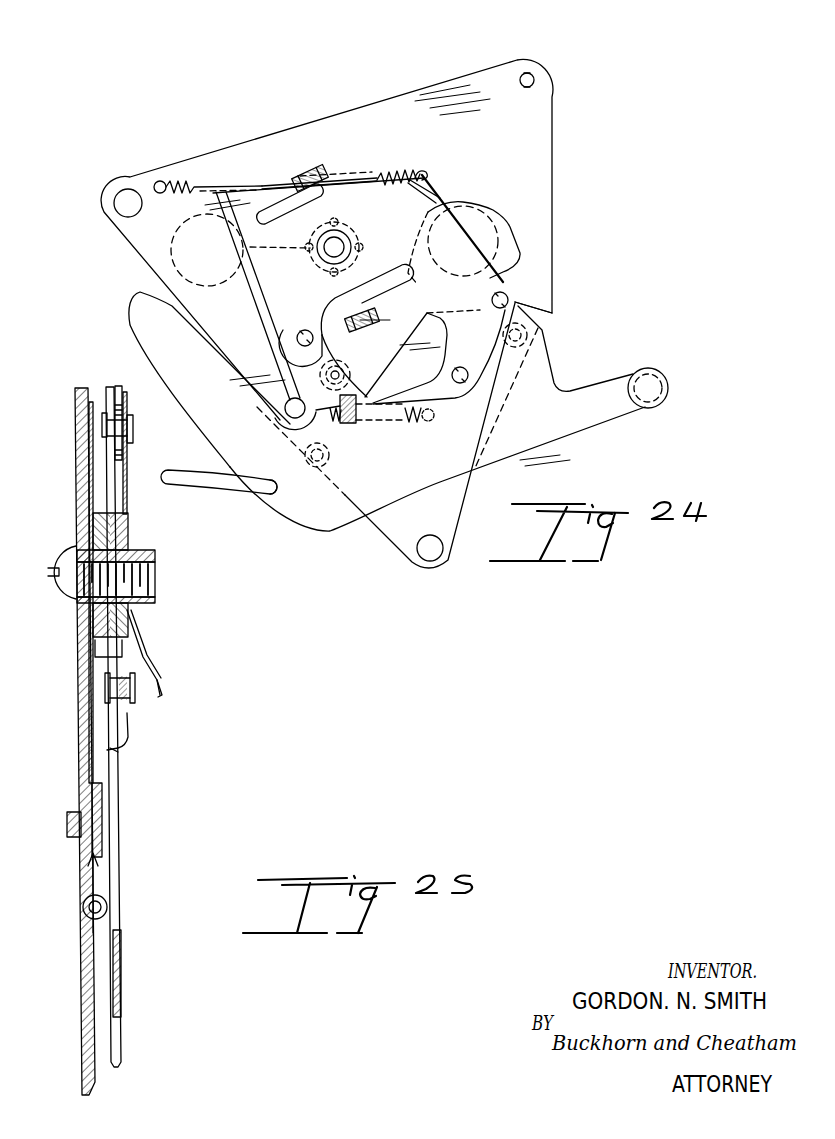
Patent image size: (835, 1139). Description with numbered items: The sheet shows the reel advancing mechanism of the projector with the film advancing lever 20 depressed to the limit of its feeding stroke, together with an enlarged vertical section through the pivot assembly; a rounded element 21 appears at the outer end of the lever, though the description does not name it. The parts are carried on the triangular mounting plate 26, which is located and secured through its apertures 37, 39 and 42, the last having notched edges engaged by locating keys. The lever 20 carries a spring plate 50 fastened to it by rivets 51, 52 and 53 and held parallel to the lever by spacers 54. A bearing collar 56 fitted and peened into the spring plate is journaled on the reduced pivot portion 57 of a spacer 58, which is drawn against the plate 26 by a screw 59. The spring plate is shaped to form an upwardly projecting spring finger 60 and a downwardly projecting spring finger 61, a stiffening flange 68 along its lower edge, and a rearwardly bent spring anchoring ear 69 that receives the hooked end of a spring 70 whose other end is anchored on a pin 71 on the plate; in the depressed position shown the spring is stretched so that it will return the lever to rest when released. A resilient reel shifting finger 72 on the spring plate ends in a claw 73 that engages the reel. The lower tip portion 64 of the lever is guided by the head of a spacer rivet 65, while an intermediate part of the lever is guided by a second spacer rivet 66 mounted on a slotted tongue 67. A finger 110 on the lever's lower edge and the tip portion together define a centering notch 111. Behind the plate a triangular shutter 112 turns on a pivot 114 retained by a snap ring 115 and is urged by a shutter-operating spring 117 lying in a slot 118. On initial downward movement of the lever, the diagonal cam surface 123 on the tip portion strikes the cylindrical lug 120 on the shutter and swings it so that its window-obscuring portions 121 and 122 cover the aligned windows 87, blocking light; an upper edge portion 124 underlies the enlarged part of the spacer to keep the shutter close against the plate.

In FIG. 24, the film advancing lever 20 is at (591, 418).
In FIG. 25, the film advancing lever 20 is at (118, 793).
In FIG. 24, the roller 21 is at (663, 372).
In FIG. 24, the triangular mounting plate 26 is at (553, 182).
In FIG. 25, the triangular mounting plate 26 is at (82, 748).
In FIG. 24, the aperture 37 is at (124, 212).
In FIG. 24, the aperture 39 is at (440, 553).
In FIG. 24, the aperture 42 is at (533, 75).
In FIG. 24, the spring plate 50 is at (430, 208).
In FIG. 25, the spring plate 50 is at (127, 466).
In FIG. 24, the rivet 51 is at (508, 292).
In FIG. 24, the rivet 52 is at (464, 367).
In FIG. 25, the rivet 52 is at (134, 432).
In FIG. 24, the rivet 53 is at (303, 330).
In FIG. 25, the rivet 53 is at (134, 700).
In FIG. 25, the spacers 54 is at (118, 386).
In FIG. 24, the bearing collar 56 is at (350, 238).
In FIG. 25, the bearing collar 56 is at (128, 535).
In FIG. 24, the reduced pivot portion 57 is at (347, 250).
In FIG. 25, the reduced pivot portion 57 is at (154, 597).
In FIG. 25, the spacer 58 is at (92, 625).
In FIG. 25, the screw 59 is at (68, 600).
In FIG. 24, the upwardly projecting spring finger 60 is at (275, 190).
In FIG. 24, the downwardly projecting spring finger 61 is at (400, 316).
In FIG. 24, the lower tip portion 64 is at (138, 305).
In FIG. 25, the lower tip portion 64 is at (120, 972).
In FIG. 24, the spacer rivet 65 is at (313, 461).
In FIG. 24, the second spacer rivet 66 is at (533, 335).
In FIG. 24, the tongue 67 is at (547, 328).
In FIG. 24, the flange 68 is at (264, 300).
In FIG. 25, the flange 68 is at (118, 752).
In FIG. 24, the spring anchoring ear 69 is at (428, 174).
In FIG. 24, the spring 70 is at (393, 176).
In FIG. 24, the pin 71 is at (158, 181).
In FIG. 24, the reel shifting finger 72 is at (390, 412).
In FIG. 25, the reel shifting finger 72 is at (146, 642).
In FIG. 24, the claw 73 is at (347, 426).
In FIG. 25, the claw 73 is at (165, 683).
In FIG. 24, the windows 87 is at (224, 266).
In FIG. 24, the finger 110 is at (185, 478).
In FIG. 24, the notch 111 is at (262, 483).
In FIG. 25, the shutter 112 is at (97, 877).
In FIG. 24, the pivot 114 is at (351, 380).
In FIG. 25, the pivot 114 is at (102, 808).
In FIG. 25, the snap ring 115 is at (78, 838).
In FIG. 24, the shutter-operating spring 117 is at (426, 421).
In FIG. 25, the shutter-operating spring 117 is at (107, 906).
In FIG. 25, the slot 118 is at (85, 920).
In FIG. 24, the cylindrical lug 120 is at (290, 398).
In FIG. 24, the window-obscuring portion 121 is at (180, 235).
In FIG. 24, the window-obscuring portion 122 is at (500, 240).
In FIG. 24, the cam surface 123 is at (153, 300).
In FIG. 25, the upper edge portion 124 is at (86, 672).